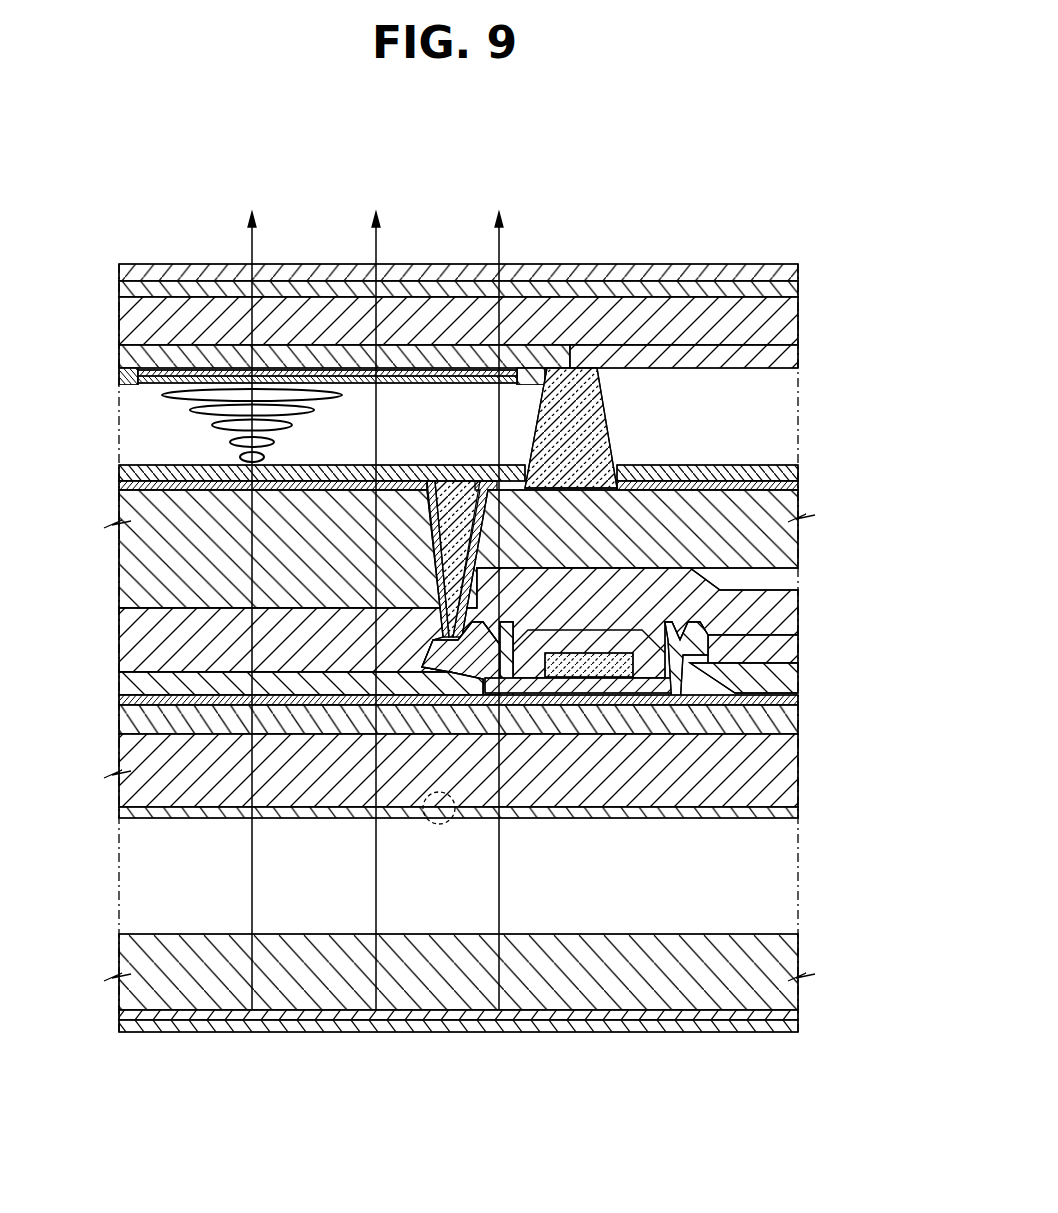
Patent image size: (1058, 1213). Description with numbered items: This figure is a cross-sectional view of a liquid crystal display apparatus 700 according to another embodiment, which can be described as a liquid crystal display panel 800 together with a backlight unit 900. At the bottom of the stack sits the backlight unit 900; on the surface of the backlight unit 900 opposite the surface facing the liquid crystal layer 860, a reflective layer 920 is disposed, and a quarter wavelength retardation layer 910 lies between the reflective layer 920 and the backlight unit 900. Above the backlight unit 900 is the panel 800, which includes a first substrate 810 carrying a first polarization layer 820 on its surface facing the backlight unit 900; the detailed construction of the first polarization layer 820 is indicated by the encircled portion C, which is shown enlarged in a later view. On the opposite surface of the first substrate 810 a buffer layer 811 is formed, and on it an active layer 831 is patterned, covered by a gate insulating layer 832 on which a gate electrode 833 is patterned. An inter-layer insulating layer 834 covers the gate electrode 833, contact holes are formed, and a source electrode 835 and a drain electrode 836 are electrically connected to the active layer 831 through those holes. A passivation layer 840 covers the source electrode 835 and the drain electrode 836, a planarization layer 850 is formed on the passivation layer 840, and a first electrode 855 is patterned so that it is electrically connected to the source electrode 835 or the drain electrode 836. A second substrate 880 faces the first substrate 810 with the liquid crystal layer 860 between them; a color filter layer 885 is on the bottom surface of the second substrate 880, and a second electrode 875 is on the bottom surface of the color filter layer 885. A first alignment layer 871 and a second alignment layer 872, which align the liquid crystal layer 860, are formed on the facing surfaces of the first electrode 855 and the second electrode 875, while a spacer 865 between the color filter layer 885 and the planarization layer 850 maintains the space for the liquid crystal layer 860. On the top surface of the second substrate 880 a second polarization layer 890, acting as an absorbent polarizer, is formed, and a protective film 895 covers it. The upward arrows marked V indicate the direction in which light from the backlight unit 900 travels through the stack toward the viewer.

The liquid crystal display apparatus 700 is at (592, 170).
The liquid crystal display panel 800 is at (757, 223).
The first substrate 810 is at (780, 770).
The buffer layer 811 is at (790, 722).
The first polarization layer 820 is at (790, 812).
The active layer 831 is at (625, 703).
The gate insulating layer 832 is at (745, 693).
The gate electrode 833 is at (577, 672).
The inter-layer insulating layer 834 is at (790, 668).
The source electrode 835 is at (678, 690).
The drain electrode 836 is at (505, 690).
The passivation layer 840 is at (790, 598).
The planarization layer 850 is at (790, 522).
The first electrode 855 is at (118, 490).
The liquid crystal layer 860 is at (148, 428).
The spacer 865 is at (590, 428).
The first alignment layer 871 is at (118, 470).
The second alignment layer 872 is at (118, 377).
The second electrode 875 is at (430, 368).
The second substrate 880 is at (787, 325).
The color filter layer 885 is at (528, 357).
The second polarization layer 890 is at (793, 290).
The protective film 895 is at (790, 268).
The backlight unit 900 is at (790, 958).
The quarter wavelength retardation layer 910 is at (795, 1014).
The reflective layer 920 is at (795, 1028).
The viewing direction V is at (253, 876).
The portion C is at (438, 830).